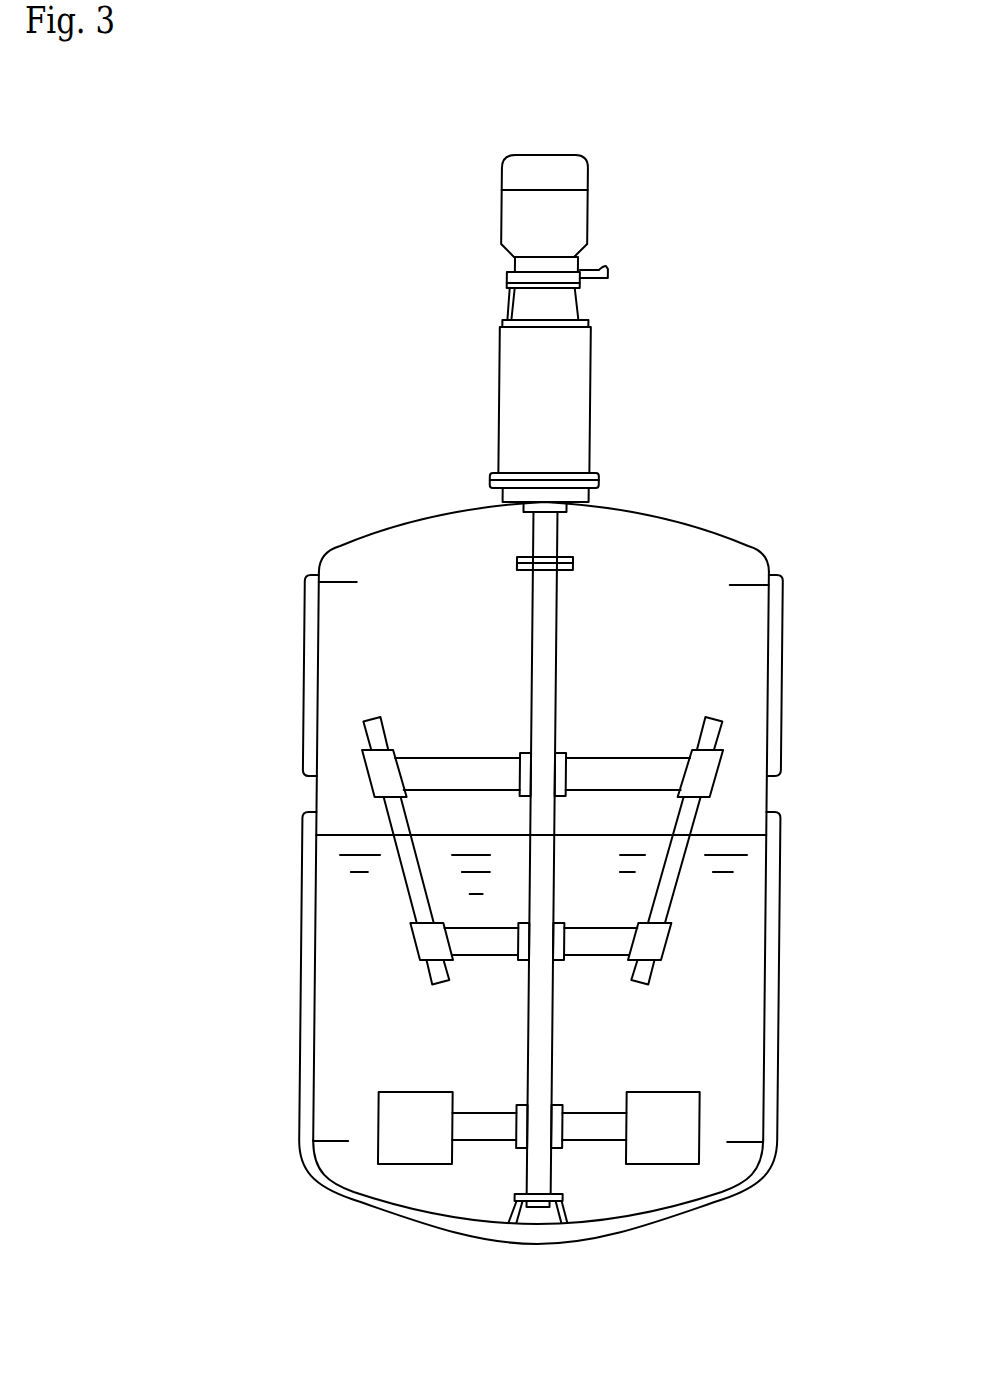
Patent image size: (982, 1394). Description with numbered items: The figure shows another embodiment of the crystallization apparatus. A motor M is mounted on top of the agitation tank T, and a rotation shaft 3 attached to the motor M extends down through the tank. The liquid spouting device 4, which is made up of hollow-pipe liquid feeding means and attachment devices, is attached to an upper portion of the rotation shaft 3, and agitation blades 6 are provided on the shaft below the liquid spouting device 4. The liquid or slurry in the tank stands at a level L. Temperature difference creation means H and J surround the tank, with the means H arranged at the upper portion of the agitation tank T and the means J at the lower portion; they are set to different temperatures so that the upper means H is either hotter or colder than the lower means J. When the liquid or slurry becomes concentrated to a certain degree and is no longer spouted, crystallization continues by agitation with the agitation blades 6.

The motor M is at (582, 225).
The agitation tank T is at (717, 535).
The rotation shaft 3 is at (557, 602).
The liquid spouting device 4 is at (424, 753).
The temperature difference creation means H is at (775, 684).
The liquid level L is at (742, 833).
The temperature difference creation means J is at (782, 999).
The agitation blades 6 is at (691, 1145).